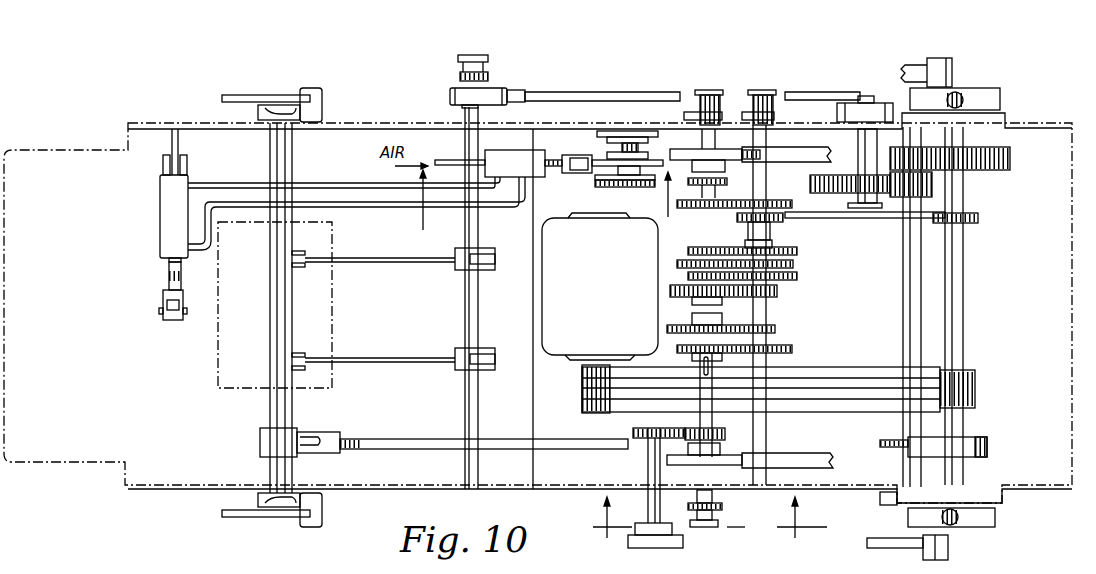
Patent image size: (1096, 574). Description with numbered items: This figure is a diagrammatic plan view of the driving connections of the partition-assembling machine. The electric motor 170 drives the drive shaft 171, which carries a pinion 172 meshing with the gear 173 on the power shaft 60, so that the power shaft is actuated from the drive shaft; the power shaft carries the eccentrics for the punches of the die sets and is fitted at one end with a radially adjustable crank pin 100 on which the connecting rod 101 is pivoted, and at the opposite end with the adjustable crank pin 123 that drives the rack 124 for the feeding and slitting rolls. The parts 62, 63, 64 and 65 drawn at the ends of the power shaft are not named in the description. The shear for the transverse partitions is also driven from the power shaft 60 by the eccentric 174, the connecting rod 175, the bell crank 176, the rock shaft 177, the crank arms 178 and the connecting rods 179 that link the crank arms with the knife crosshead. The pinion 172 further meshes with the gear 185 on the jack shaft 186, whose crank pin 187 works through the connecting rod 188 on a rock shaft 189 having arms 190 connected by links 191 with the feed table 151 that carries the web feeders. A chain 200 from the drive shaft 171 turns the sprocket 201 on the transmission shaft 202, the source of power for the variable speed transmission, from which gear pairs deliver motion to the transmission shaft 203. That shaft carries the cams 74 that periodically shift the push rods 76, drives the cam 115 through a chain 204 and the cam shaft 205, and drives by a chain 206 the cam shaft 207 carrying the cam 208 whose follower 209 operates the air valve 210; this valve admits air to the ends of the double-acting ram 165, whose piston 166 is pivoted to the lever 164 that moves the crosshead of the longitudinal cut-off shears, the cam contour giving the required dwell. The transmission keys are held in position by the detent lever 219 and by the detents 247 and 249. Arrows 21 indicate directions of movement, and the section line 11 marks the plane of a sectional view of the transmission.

The section line 11- 11 is at (703, 516).
The direction arrows 21 is at (543, 203).
The power shaft 60 is at (963, 262).
The lower bearing block 62 is at (995, 517).
The upper bearing block 63 is at (1000, 99).
The lower pivot pin 64 is at (958, 522).
The upper pivot pin 65 is at (963, 98).
The cam 74 is at (730, 150).
The push rod 76 is at (800, 158).
The crank pin 100 is at (948, 550).
The connecting rod 101 is at (906, 548).
The cam 115 is at (683, 540).
The crank pin 123 is at (952, 68).
The rack 124 is at (915, 70).
The feed table 151 is at (318, 340).
The lever 164 is at (170, 313).
The double-acting ram 165 is at (160, 193).
The piston 166 is at (168, 276).
The electric motor 170 is at (610, 328).
The drive shaft 171 is at (903, 268).
The pinion 172 is at (932, 185).
The gear 173 is at (1010, 160).
The eccentric 174 is at (987, 446).
The connecting rod 175 is at (440, 440).
The bell crank 176 is at (300, 440).
The rock shaft 177 is at (270, 408).
The crank arms 178 is at (282, 108).
The connecting rods 179 is at (262, 98).
The gear 185 is at (850, 194).
The jack shaft 186 is at (858, 150).
The crank pin 187 is at (878, 80).
The connecting rod 188 is at (596, 92).
The rock shaft 189 is at (478, 310).
The arms 190 is at (490, 260).
The links 191 is at (400, 258).
The chain 200 is at (840, 219).
The sprocket 201 is at (775, 224).
The transmission shaft 202 is at (760, 305).
The transmission shaft 203 is at (704, 405).
The chain 204 is at (680, 432).
The cam shaft 205 is at (648, 476).
The chain 206 is at (652, 192).
The cam shaft 207 is at (630, 143).
The cam 208 is at (648, 160).
The follower 209 is at (582, 152).
The air valve 210 is at (523, 163).
The detent lever 219 is at (744, 115).
The detent 247 is at (692, 115).
The detent 249 is at (722, 506).